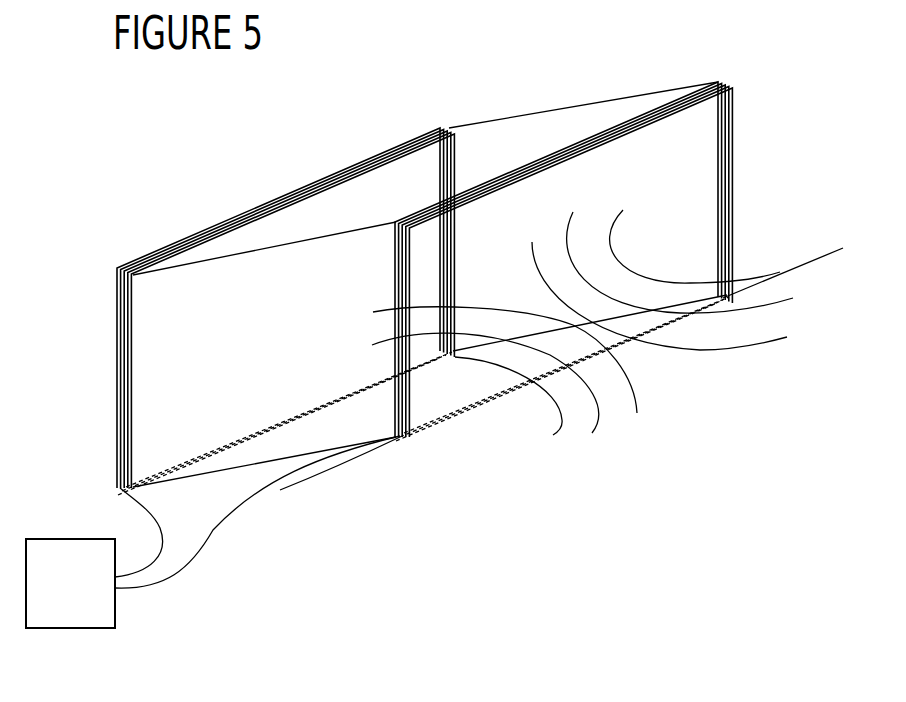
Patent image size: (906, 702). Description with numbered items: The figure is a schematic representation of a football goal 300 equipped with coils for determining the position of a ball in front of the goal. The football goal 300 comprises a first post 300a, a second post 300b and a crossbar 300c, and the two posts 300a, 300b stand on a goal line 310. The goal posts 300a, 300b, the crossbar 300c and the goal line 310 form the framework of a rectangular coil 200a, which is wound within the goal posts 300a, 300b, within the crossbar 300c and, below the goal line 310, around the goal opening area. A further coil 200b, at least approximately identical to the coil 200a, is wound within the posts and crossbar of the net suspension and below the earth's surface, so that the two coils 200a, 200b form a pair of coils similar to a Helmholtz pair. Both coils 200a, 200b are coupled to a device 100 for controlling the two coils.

The device for controlling the two coils 100 is at (85, 628).
The rectangular coil 200a is at (733, 148).
The coil 200b is at (384, 151).
The football goal 300 is at (723, 71).
The first post 300a is at (408, 378).
The second post 300b is at (733, 210).
The crossbar 300c is at (518, 167).
The goal line 310 is at (367, 457).